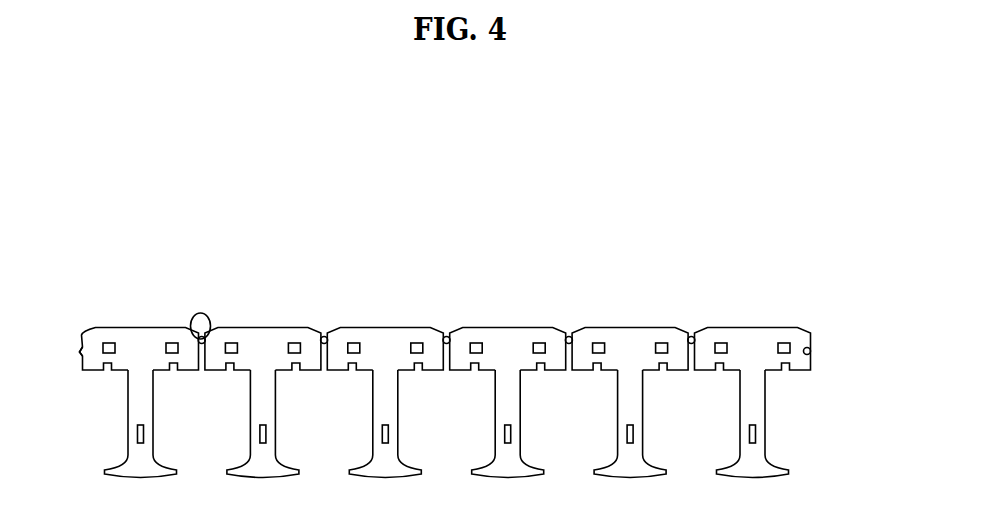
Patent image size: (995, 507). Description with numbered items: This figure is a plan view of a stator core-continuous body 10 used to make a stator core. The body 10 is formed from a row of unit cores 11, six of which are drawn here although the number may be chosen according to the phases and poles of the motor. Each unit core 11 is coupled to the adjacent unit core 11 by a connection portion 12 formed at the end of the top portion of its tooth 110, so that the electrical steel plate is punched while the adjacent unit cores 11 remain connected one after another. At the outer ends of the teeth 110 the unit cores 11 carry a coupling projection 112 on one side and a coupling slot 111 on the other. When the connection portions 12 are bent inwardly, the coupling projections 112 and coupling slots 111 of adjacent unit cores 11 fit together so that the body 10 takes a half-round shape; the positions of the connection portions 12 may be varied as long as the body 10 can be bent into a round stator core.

The stator core-continuous body 10 is at (657, 293).
The unit core 11 is at (143, 401).
The tooth 110 is at (139, 345).
The coupling slot 111 is at (202, 343).
The coupling projection 112 is at (76, 351).
The connection portion 12 is at (202, 313).